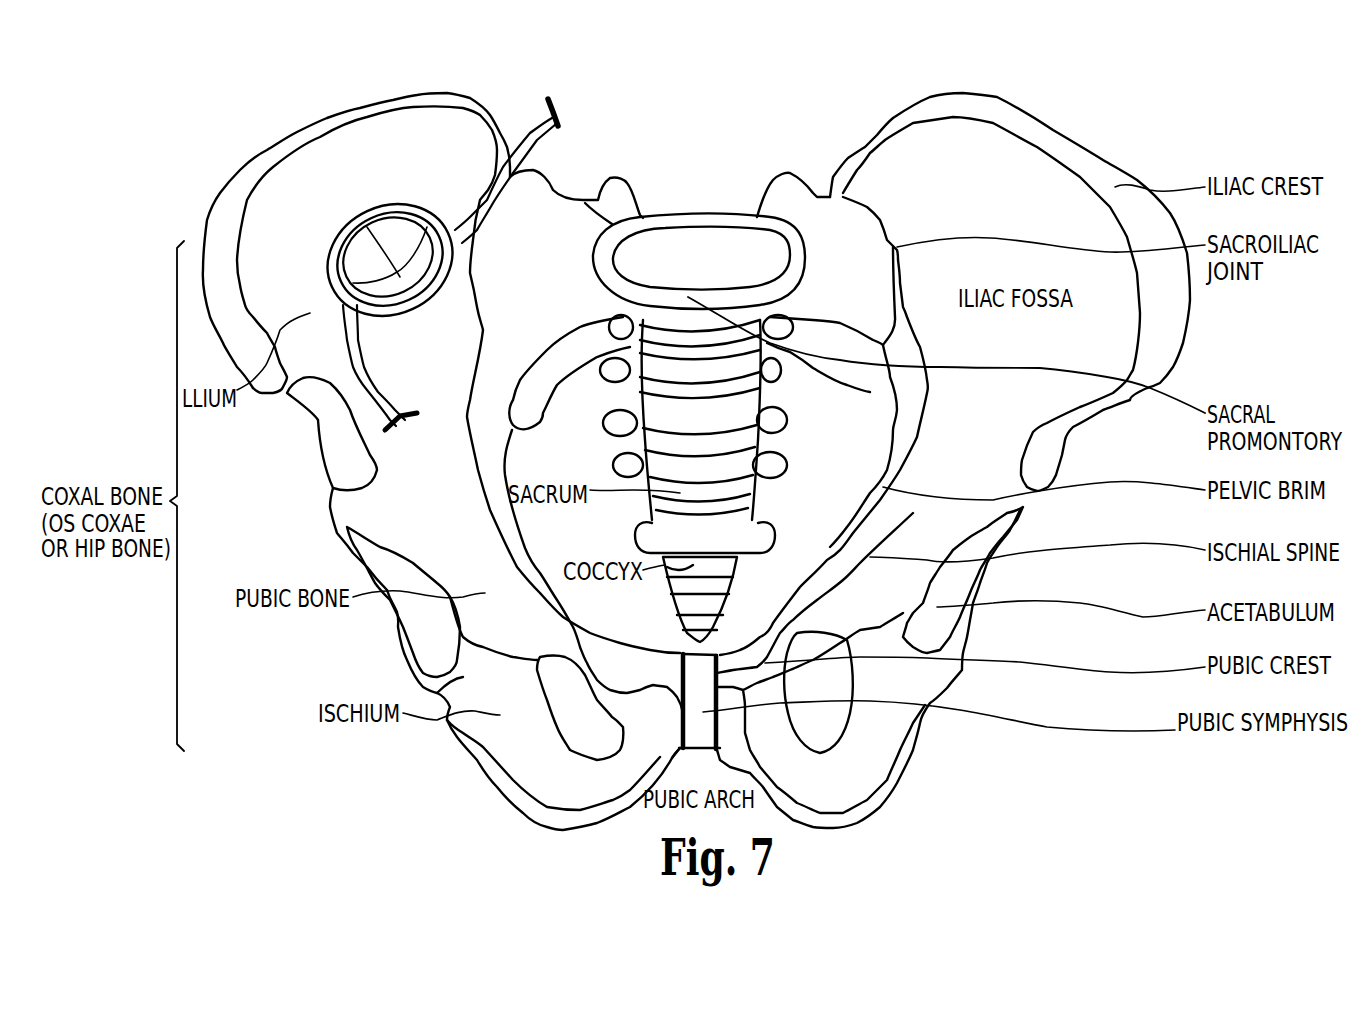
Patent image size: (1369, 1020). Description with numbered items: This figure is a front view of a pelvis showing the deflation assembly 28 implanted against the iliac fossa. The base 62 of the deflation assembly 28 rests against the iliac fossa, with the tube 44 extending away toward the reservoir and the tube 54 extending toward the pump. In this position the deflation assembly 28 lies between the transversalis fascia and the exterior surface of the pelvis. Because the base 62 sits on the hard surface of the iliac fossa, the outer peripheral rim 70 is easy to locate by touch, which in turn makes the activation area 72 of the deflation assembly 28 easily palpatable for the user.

The deflation assembly 28 is at (427, 190).
The tube 44 is at (540, 123).
The outer peripheral rim 70 is at (353, 233).
The base 62 is at (427, 290).
The activation area 72 is at (397, 240).
The tube 54 is at (368, 363).